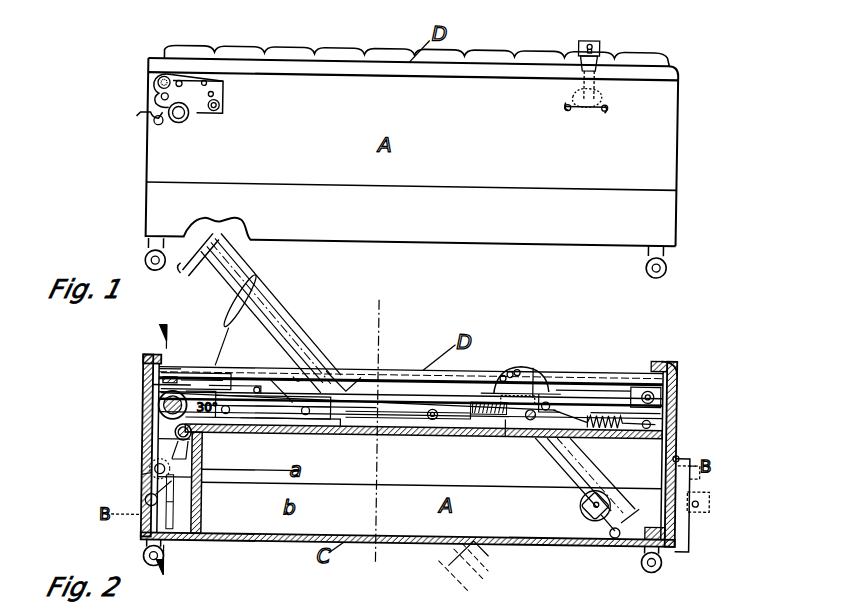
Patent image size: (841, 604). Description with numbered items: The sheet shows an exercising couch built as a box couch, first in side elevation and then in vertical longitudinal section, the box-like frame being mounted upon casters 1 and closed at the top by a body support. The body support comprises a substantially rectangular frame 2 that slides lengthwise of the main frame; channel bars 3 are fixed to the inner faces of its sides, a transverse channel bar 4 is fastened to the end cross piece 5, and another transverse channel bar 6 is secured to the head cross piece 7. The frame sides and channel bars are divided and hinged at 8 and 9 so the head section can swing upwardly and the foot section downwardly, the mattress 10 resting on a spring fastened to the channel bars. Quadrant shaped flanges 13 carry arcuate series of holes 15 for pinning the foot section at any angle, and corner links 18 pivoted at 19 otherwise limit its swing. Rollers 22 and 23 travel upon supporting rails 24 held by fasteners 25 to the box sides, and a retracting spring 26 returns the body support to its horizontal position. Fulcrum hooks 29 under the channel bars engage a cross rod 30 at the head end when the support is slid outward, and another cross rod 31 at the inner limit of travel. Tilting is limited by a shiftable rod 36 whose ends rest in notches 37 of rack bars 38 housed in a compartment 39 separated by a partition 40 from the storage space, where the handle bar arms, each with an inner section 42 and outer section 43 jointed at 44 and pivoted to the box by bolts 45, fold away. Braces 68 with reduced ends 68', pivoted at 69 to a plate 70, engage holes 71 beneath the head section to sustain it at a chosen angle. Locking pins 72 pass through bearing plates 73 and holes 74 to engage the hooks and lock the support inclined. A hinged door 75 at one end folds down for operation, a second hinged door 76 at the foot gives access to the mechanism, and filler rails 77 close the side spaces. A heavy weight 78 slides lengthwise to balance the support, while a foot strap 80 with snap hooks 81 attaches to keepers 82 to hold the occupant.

In FIG. 1, the casters 1 is at (147, 260).
In FIG. 2, the casters 1 is at (144, 557).
In FIG. 2, the rectangular frame 2 is at (566, 380).
In FIG. 2, the channel bars 3 is at (466, 380).
In FIG. 2, the transverse channel bar 4 is at (670, 355).
In FIG. 2, the end cross piece 5 is at (692, 380).
In FIG. 2, the transverse channel bar 6 is at (176, 378).
In FIG. 2, the head cross piece 7 is at (160, 382).
In FIG. 2, the hinge 8 is at (322, 378).
In FIG. 2, the hinge 9 is at (548, 392).
In FIG. 1, the mattress 10 is at (322, 48).
In FIG. 2, the quadrant shaped flanges 13 is at (536, 380).
In FIG. 2, the holes 15 is at (530, 368).
In FIG. 2, the corner links 18 is at (484, 435).
In FIG. 2, the pivot 19 is at (546, 380).
In FIG. 2, the rollers 22 is at (385, 380).
In FIG. 2, the rollers 23 is at (672, 406).
In FIG. 2, the supporting rails 24 is at (396, 437).
In FIG. 2, the fasteners 25 is at (460, 437).
In FIG. 2, the retracting spring 26 is at (598, 416).
In FIG. 2, the fulcrum hooks 29 is at (334, 422).
In FIG. 2, the cross rod or shaft 30 is at (158, 410).
In FIG. 2, the cross rod or shaft 31 is at (370, 452).
In FIG. 2, the shiftable rod 36 is at (148, 497).
In FIG. 2, the notches 37 is at (174, 502).
In FIG. 2, the rack bars 38 is at (178, 511).
In FIG. 2, the compartment 39 is at (188, 466).
In FIG. 2, the partition 40 is at (200, 506).
In FIG. 2, the inner section 42 is at (156, 444).
In FIG. 2, the outer section 43 is at (152, 466).
In FIG. 2, the jointed or pivotal connection 44 is at (192, 478).
In FIG. 1, the bolts or studs 45 is at (156, 85).
In FIG. 2, the braces 68 is at (271, 331).
In FIG. 2, the reduced ends 68' is at (287, 328).
In FIG. 2, the pivot 69 is at (255, 427).
In FIG. 2, the plate 70 is at (287, 374).
In FIG. 2, the holes 71 is at (246, 300).
In FIG. 1, the locking pins 72 is at (219, 108).
In FIG. 1, the bearing plates 73 is at (200, 111).
In FIG. 1, the holes 74 is at (214, 96).
In FIG. 2, the hinged door 75 is at (160, 434).
In FIG. 2, the hinged door 76 is at (672, 434).
In FIG. 1, the flaps or filler rails 77 is at (530, 78).
In FIG. 2, the heavy bar or weight 78 is at (158, 390).
In FIG. 1, the foot strap 80 is at (596, 36).
In FIG. 1, the snap hooks 81 is at (604, 98).
In FIG. 1, the keepers 82 is at (578, 112).